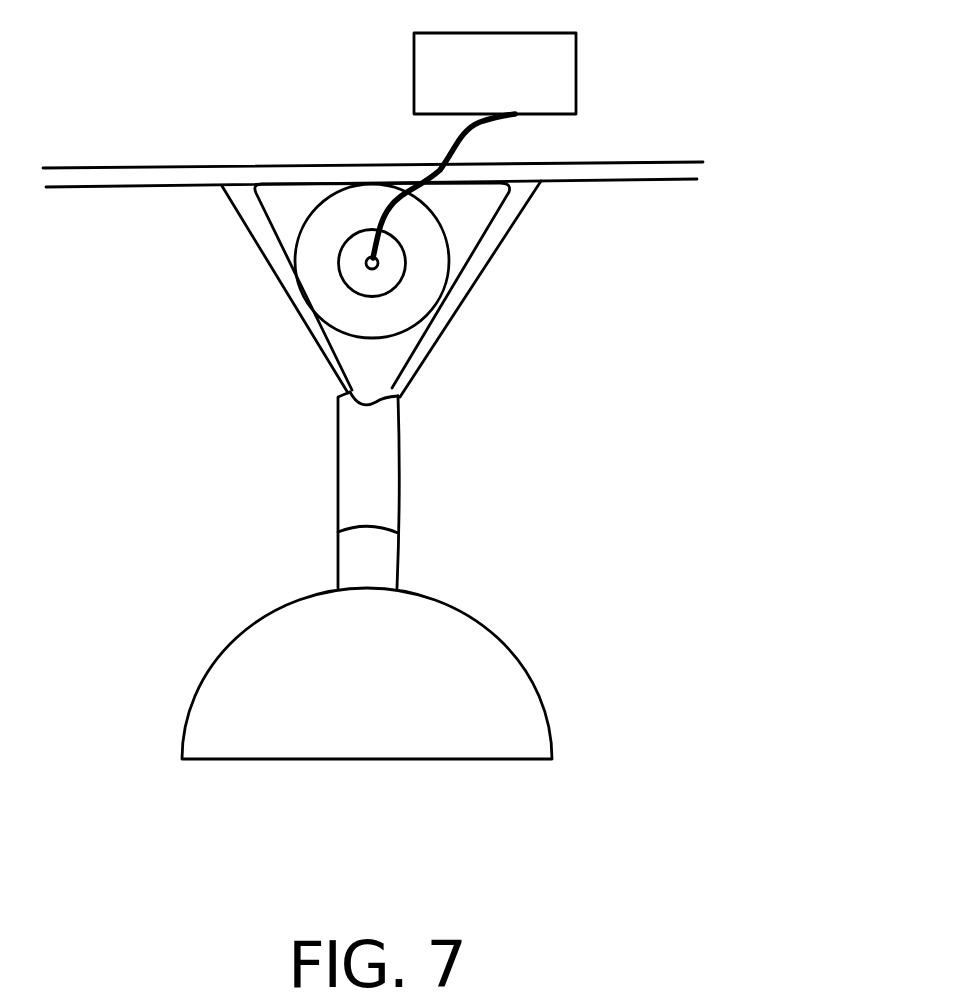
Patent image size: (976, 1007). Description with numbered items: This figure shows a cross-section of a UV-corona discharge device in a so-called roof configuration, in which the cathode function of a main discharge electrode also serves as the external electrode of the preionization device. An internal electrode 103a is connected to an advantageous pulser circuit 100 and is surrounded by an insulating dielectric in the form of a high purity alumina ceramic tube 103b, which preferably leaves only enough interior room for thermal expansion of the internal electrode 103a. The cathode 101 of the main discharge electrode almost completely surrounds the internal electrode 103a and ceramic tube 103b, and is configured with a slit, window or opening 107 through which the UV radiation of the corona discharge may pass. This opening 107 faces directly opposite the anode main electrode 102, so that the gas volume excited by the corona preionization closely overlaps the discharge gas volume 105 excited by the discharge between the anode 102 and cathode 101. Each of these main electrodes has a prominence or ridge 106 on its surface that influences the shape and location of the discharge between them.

The pulser circuit 100 is at (628, 77).
The cathode 101 is at (455, 346).
The anode main electrode 102 is at (430, 647).
The internal electrode 103a is at (330, 273).
The ceramic tube 103b is at (470, 236).
The discharge gas volume 105 is at (412, 457).
The prominence or ridge 106 is at (312, 558).
The opening 107 is at (318, 404).